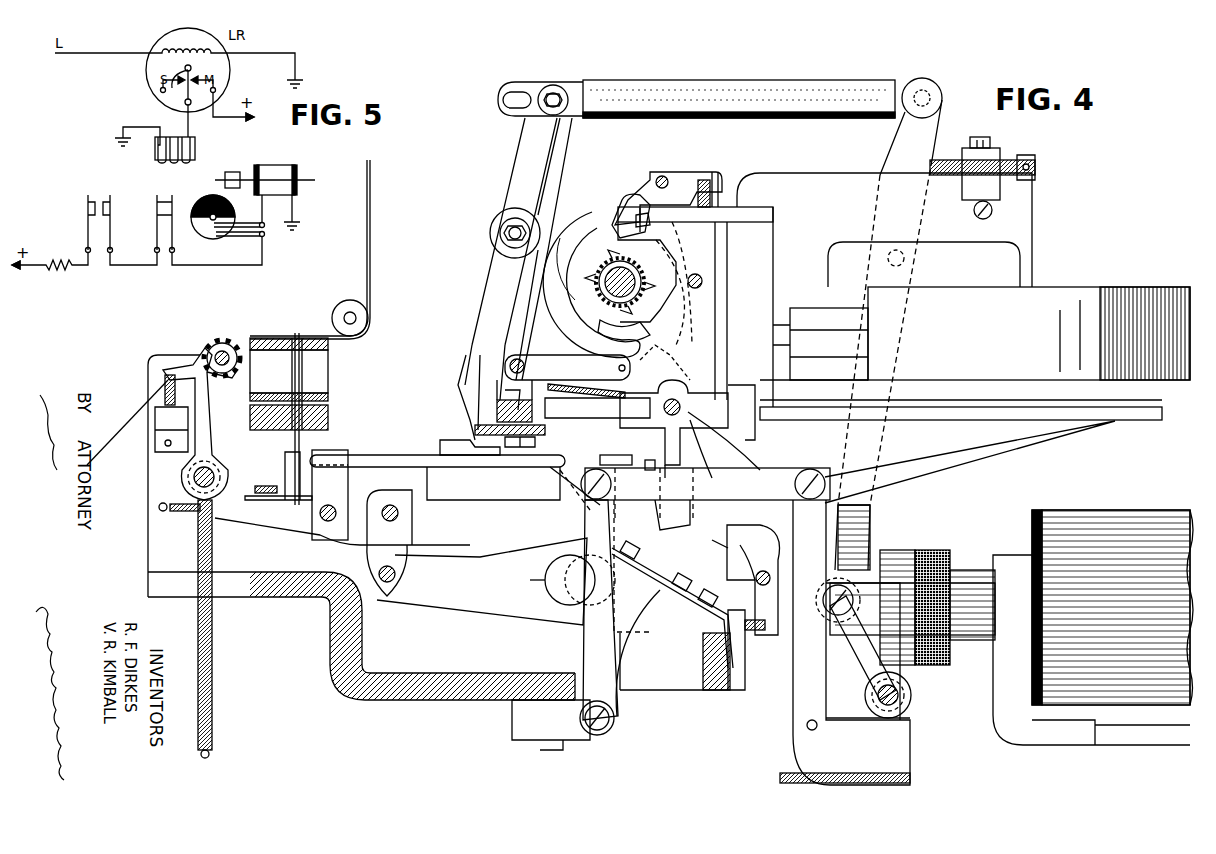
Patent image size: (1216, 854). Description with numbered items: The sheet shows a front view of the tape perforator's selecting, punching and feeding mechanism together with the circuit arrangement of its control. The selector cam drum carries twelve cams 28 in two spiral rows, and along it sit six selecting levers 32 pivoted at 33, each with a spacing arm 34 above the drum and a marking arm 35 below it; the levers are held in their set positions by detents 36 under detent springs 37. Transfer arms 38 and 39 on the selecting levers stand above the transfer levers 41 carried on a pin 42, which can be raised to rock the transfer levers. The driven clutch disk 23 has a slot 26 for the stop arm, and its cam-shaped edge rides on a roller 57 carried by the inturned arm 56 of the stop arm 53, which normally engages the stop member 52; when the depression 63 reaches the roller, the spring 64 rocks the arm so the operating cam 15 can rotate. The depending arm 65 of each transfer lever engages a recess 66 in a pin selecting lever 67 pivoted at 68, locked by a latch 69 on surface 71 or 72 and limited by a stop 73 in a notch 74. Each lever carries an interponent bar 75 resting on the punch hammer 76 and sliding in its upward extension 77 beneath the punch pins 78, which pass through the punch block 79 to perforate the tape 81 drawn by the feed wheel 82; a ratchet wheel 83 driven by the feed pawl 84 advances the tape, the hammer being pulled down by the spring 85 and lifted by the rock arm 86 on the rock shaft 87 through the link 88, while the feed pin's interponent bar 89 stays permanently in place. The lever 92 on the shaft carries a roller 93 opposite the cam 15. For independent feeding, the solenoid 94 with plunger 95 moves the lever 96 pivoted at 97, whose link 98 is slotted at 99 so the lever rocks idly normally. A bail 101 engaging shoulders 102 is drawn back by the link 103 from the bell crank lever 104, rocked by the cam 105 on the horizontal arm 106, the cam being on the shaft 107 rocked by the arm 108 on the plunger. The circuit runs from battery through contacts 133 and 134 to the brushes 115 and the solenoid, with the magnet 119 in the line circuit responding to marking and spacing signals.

In FIG. 4, the operating cam 15 is at (570, 226).
In FIG. 4, the driven clutch disk 23 is at (669, 362).
In FIG. 4, the slot 26 is at (652, 220).
In FIG. 4, the cams 28 is at (604, 266).
In FIG. 4, the selecting levers 32 is at (718, 254).
In FIG. 4, the pivot 33 is at (700, 286).
In FIG. 4, the spacing arm 34 is at (612, 236).
In FIG. 4, the marking arm 35 is at (604, 318).
In FIG. 4, the detents 36 is at (690, 173).
In FIG. 4, the detent springs 37 is at (720, 184).
In FIG. 4, the transfer arm 38 is at (648, 398).
In FIG. 4, the transfer arm 39 is at (727, 396).
In FIG. 4, the transfer levers 41 is at (682, 430).
In FIG. 4, the pin 42 is at (688, 412).
In FIG. 4, the stop member 52 is at (540, 222).
In FIG. 4, the stop arm 53 is at (510, 312).
In FIG. 4, the inturned arm 56 is at (508, 380).
In FIG. 4, the roller 57 is at (618, 368).
In FIG. 4, the depression 63 is at (676, 263).
In FIG. 4, the spring 64 is at (572, 396).
In FIG. 4, the depending arm 65 is at (682, 466).
In FIG. 4, the recess 66 is at (668, 516).
In FIG. 4, the pin selecting levers 67 is at (625, 675).
In FIG. 4, the pivot 68 is at (612, 728).
In FIG. 4, the locking latch 69 is at (748, 548).
In FIG. 4, the surface 71 is at (712, 540).
In FIG. 4, the surface 72 is at (733, 570).
In FIG. 4, the limiting stop 73 is at (675, 590).
In FIG. 4, the notch 74 is at (702, 596).
In FIG. 4, the interponent bars 75 is at (470, 470).
In FIG. 4, the punch hammer 76 is at (270, 518).
In FIG. 4, the upward extension 77 is at (345, 460).
In FIG. 4, the punch pins 78 is at (292, 444).
In FIG. 4, the punch block 79 is at (336, 342).
In FIG. 4, the tape 81 is at (371, 250).
In FIG. 4, the feed wheel 82 is at (235, 376).
In FIG. 4, the ratchet wheel 83 is at (228, 343).
In FIG. 4, the feed pawl 84 is at (188, 362).
In FIG. 4, the spring 85 is at (215, 707).
In FIG. 4, the rock arm 86 is at (455, 600).
In FIG. 4, the rock shaft 87 is at (565, 600).
In FIG. 4, the link 88 is at (412, 526).
In FIG. 4, the interponent bar 89 is at (285, 471).
In FIG. 4, the lever 92 is at (462, 352).
In FIG. 4, the roller 93 is at (492, 236).
In FIG. 5, the solenoid 94 is at (286, 171).
In FIG. 4, the solenoid 94 is at (1130, 522).
In FIG. 4, the plunger 95 is at (850, 588).
In FIG. 4, the lever 96 is at (862, 456).
In FIG. 4, the pivot 97 is at (905, 256).
In FIG. 4, the link 98 is at (748, 88).
In FIG. 4, the slot 99 is at (540, 92).
In FIG. 4, the bail 101 is at (616, 460).
In FIG. 4, the shoulders 102 is at (656, 462).
In FIG. 4, the link 103 is at (773, 470).
In FIG. 4, the bell crank lever 104 is at (797, 646).
In FIG. 4, the cam 105 is at (910, 700).
In FIG. 4, the horizontal arm 106 is at (898, 734).
In FIG. 4, the shaft 107 is at (895, 693).
In FIG. 4, the arm 108 is at (868, 665).
In FIG. 5, the brushes 115 is at (240, 235).
In FIG. 5, the magnet 119 is at (157, 150).
In FIG. 5, the contacts 133 is at (96, 200).
In FIG. 5, the contacts 134 is at (162, 200).